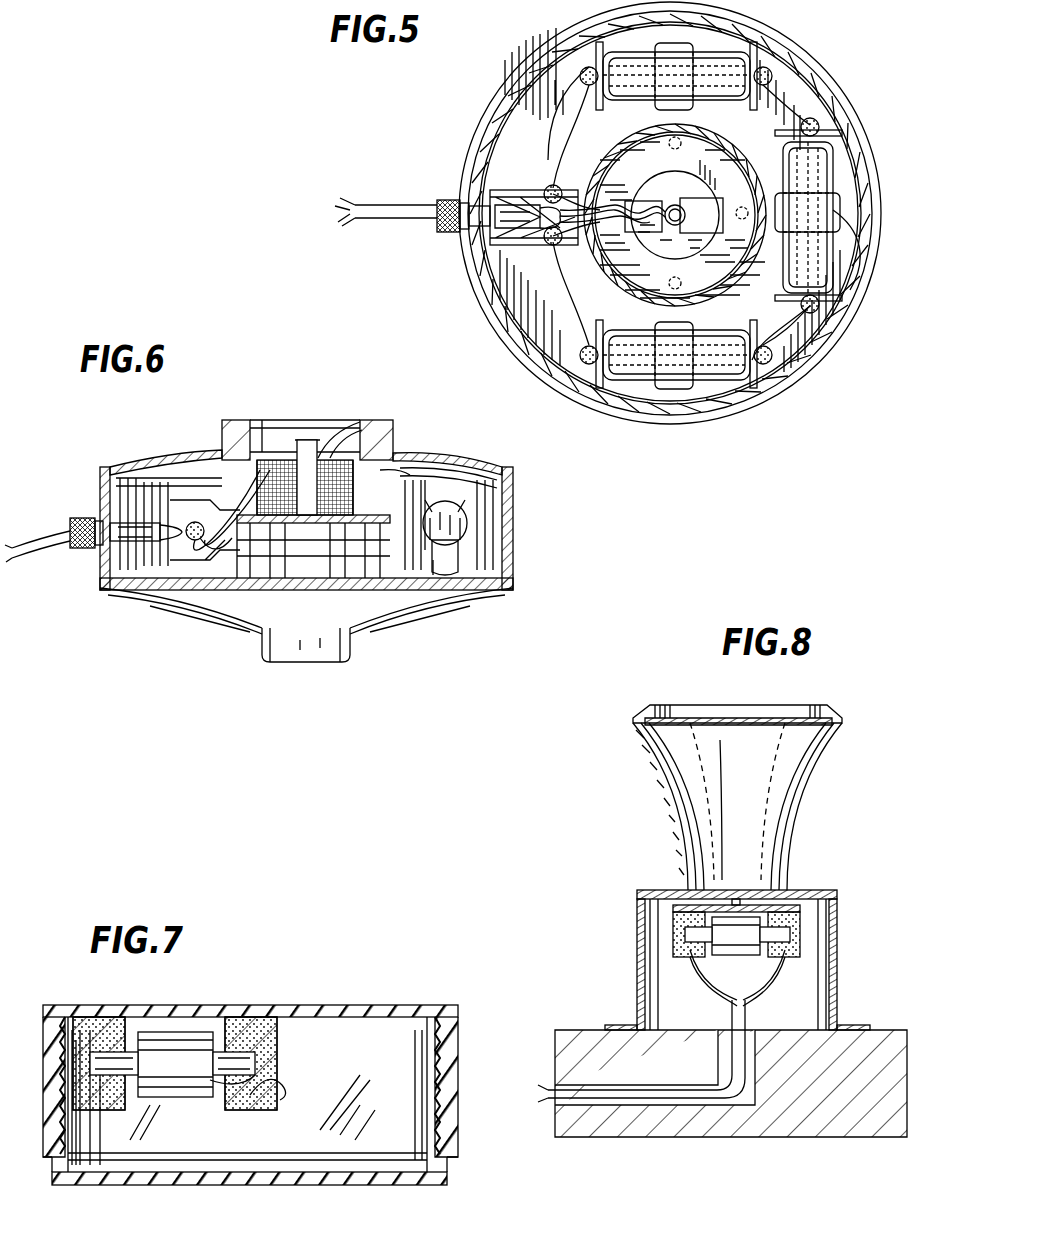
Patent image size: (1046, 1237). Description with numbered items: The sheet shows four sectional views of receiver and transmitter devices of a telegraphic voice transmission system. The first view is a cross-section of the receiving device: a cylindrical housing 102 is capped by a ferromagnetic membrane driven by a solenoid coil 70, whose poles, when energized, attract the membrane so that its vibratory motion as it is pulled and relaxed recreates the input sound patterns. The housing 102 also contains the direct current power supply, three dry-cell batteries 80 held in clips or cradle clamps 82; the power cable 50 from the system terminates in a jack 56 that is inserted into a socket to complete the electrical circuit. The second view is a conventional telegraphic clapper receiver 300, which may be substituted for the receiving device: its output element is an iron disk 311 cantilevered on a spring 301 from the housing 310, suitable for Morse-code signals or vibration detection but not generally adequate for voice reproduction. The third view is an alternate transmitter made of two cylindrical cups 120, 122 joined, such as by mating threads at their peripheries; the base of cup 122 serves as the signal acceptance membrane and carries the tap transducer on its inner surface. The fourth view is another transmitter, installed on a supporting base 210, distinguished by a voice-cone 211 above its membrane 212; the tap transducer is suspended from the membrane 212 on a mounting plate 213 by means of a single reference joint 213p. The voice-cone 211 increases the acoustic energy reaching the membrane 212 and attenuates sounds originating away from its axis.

In FIG. 5, the power cable 50 is at (418, 196).
In FIG. 5, the jack 56 is at (498, 197).
In FIG. 5, the solenoid coil 70 is at (702, 190).
In FIG. 5, the dry-cell batteries 80 is at (796, 270).
In FIG. 5, the clips or cradle clamps 82 is at (857, 262).
In FIG. 5, the cylindrical housing 102 is at (540, 297).
In FIG. 6, the telegraphic clapper receiver 300 is at (400, 612).
In FIG. 6, the spring 301 is at (337, 432).
In FIG. 6, the housing 310 is at (513, 522).
In FIG. 6, the iron disk 311 is at (264, 440).
In FIG. 7, the cylindrical cup 120 is at (447, 1178).
In FIG. 7, the cylindrical cup 122 is at (415, 990).
In FIG. 8, the ground slab 210 is at (808, 1118).
In FIG. 8, the voice-cone 211 is at (805, 810).
In FIG. 8, the membrane 212 is at (712, 893).
In FIG. 8, the mounting plate 213 is at (797, 891).
In FIG. 8, the reference joint 213p is at (745, 890).